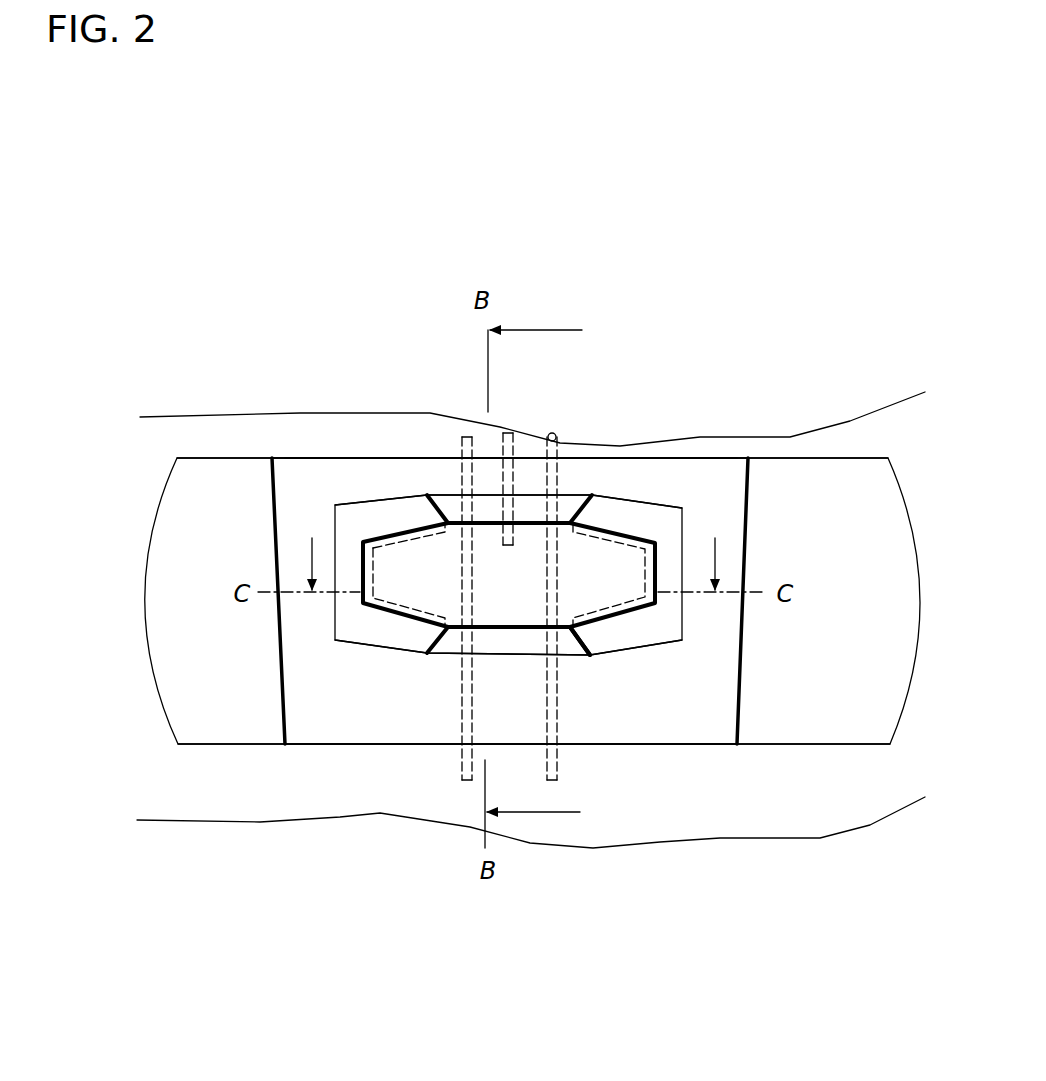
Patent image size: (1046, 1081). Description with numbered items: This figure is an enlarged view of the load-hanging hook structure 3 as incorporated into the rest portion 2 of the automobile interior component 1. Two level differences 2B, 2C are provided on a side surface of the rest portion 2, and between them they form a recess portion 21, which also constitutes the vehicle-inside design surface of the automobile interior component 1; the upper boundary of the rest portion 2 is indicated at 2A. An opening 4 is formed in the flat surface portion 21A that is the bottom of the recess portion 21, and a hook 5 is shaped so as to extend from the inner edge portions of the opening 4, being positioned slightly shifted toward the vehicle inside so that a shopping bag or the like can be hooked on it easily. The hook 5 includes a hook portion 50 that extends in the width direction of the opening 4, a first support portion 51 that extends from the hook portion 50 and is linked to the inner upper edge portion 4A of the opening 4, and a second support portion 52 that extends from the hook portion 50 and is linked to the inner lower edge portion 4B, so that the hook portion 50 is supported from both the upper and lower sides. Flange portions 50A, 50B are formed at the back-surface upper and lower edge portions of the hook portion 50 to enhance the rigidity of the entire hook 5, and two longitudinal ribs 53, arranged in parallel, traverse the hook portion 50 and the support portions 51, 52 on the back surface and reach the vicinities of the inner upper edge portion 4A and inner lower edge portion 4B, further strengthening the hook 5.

The automobile interior component 1 is at (143, 383).
The rest portion 2 is at (913, 487).
The upper edge of band 2A is at (777, 458).
The level difference 2B is at (272, 527).
The level difference 2C is at (750, 545).
The load-hanging hook structure 3 is at (768, 675).
The opening 4 is at (685, 608).
The inner upper edge portion 4A is at (508, 466).
The inner lower edge portion 4B is at (637, 633).
The hook 5 is at (662, 493).
The recess portion 21 is at (288, 456).
The flat surface portion 21A is at (612, 470).
The hook portion 50 is at (655, 603).
The flange portion 50A is at (380, 537).
The flange portion 50B is at (407, 618).
The first support portion 51 is at (568, 523).
The second support portion 52 is at (571, 656).
The longitudinal rib 53 is at (466, 437).